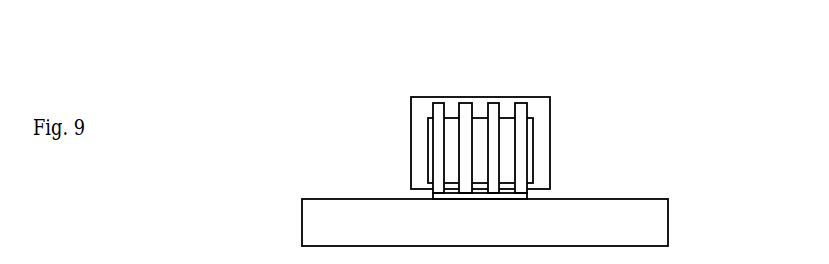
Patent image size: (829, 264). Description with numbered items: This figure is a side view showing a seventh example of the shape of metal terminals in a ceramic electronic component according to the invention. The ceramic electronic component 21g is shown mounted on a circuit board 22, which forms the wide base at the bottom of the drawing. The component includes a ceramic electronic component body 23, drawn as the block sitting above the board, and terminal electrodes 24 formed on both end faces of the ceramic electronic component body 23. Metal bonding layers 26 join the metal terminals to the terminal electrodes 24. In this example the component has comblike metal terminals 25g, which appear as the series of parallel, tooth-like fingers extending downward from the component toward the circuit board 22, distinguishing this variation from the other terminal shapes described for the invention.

The ceramic electronic component 21g is at (357, 50).
The circuit board 22 is at (662, 228).
The ceramic electronic component body 23 is at (478, 109).
The terminal electrodes 24 is at (420, 103).
The comblike metal terminals 25g is at (440, 153).
The metal bonding layers 26 is at (532, 151).